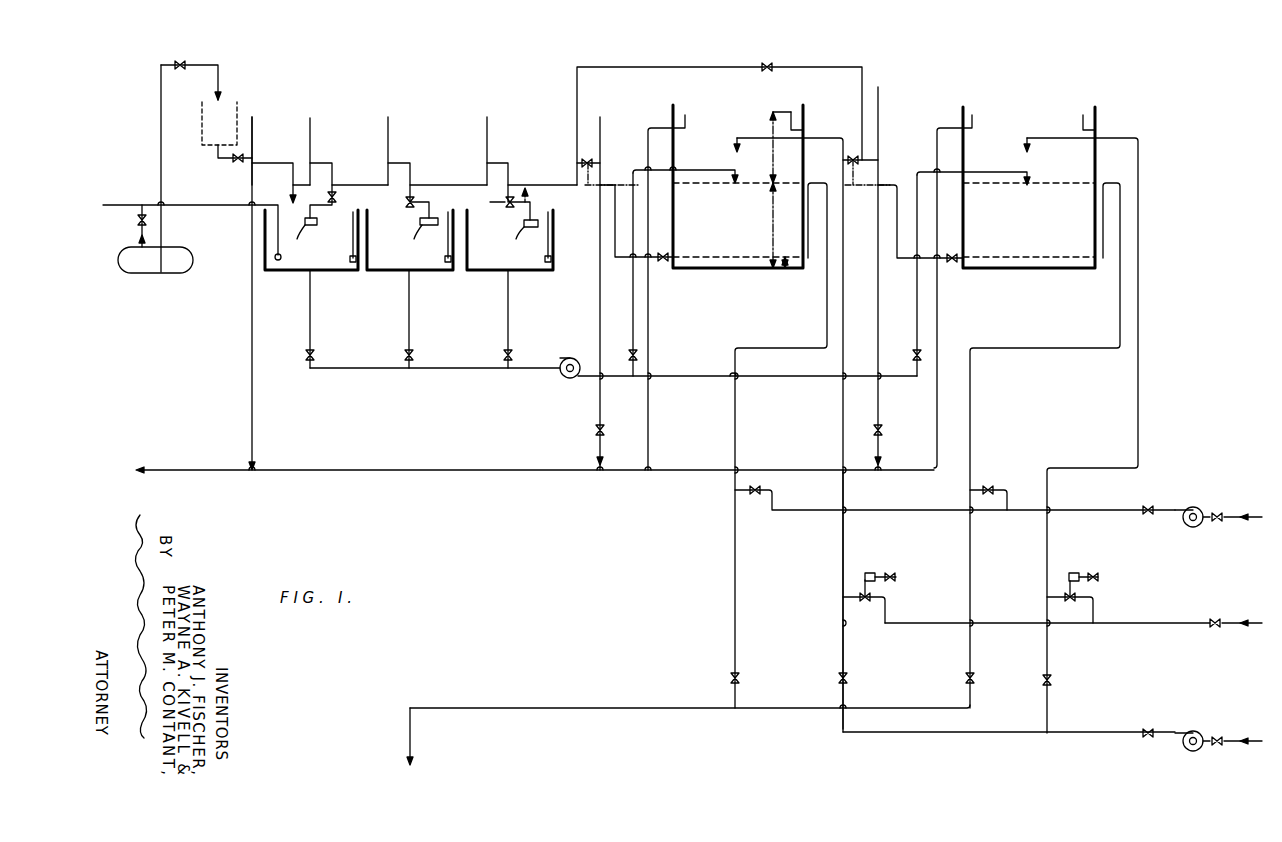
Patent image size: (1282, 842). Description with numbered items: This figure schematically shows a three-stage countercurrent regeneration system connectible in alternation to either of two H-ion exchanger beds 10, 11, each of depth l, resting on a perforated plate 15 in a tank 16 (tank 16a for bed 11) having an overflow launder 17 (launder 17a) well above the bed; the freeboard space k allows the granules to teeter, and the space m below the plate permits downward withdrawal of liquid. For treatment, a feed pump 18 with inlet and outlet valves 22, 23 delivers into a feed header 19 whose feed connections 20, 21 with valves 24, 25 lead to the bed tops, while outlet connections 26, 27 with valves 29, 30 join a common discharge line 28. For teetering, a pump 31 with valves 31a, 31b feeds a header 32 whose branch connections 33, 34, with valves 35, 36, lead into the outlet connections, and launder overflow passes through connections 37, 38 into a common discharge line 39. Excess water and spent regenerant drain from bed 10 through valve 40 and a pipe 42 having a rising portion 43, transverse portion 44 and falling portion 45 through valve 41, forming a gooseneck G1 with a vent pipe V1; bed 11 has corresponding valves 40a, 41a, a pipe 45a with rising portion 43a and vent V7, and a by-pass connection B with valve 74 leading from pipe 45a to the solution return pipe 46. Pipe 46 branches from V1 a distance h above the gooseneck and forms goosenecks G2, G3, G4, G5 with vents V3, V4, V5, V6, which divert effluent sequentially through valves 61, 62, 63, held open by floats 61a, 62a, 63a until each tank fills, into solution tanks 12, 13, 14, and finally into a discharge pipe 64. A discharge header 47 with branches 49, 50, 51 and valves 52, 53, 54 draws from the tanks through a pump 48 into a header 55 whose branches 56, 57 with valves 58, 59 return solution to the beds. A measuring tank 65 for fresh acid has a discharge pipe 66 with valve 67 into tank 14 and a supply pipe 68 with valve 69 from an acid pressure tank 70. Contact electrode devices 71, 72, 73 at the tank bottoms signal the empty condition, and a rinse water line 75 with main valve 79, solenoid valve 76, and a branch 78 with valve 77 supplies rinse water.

The exchanger bed 10 is at (738, 186).
The exchanger bed 11 is at (1029, 187).
The solution tank 12 is at (510, 240).
The solution tank 13 is at (410, 240).
The solution tank 14 is at (311, 240).
The perforated plate 15 is at (718, 270).
The tank 16 is at (656, 126).
The inlet pipe 16a is at (960, 126).
The overflow launder 17 is at (685, 115).
The overflow spout 17a is at (975, 116).
The feed pump 18 is at (1188, 749).
The feed header 19 is at (978, 732).
The feed connection 20 is at (843, 537).
The feed connection 21 is at (1138, 315).
The shut-off valve 22 is at (1217, 733).
The shut-off valve 23 is at (1145, 725).
The shut-off valve 24 is at (848, 679).
The shut-off valve 25 is at (1051, 679).
The outlet connection 26 is at (734, 558).
The outlet connection 27 is at (1118, 318).
The common discharge line 28 is at (535, 702).
The shut-off valve 29 is at (728, 679).
The shut-off valve 30 is at (974, 679).
The pump 31 is at (1203, 506).
The inlet valve 31a is at (1222, 512).
The outlet valve 31b is at (1145, 516).
The header 32 is at (1082, 509).
The branch connection 33 is at (1006, 498).
The branch connection 34 is at (775, 499).
The shut-off valve 35 is at (988, 487).
The shut-off valve 36 is at (755, 496).
The connection 37 is at (937, 330).
The connection 38 is at (648, 336).
The common discharge line 39 is at (458, 475).
The valve 40 is at (664, 264).
The valve 40a is at (951, 267).
The valve 41 is at (604, 432).
The valve 41a is at (880, 432).
The pipe 42 is at (624, 262).
The rising portion 43 is at (620, 194).
The pipe 43a is at (896, 184).
The transverse portion 44 is at (605, 188).
The falling portion 45 is at (600, 310).
The pipe 45a is at (878, 282).
The solution return pipe 46 is at (547, 185).
The discharge header 47 is at (480, 382).
The pump 48 is at (563, 382).
The branch connection 49 is at (508, 307).
The branch connection 50 is at (409, 307).
The branch connection 51 is at (308, 330).
The shut-off valve 52 is at (513, 357).
The shut-off valve 53 is at (414, 357).
The shut-off valve 54 is at (315, 357).
The header 55 is at (606, 385).
The branch connection 56 is at (633, 316).
The branch connection 57 is at (905, 300).
The shut-off valve 58 is at (630, 355).
The shut-off valve 59 is at (912, 357).
The valve 61 is at (500, 200).
The float 61a is at (529, 233).
The valve 62 is at (422, 201).
The float 62a is at (427, 236).
The valve 63 is at (323, 223).
The float 63a is at (298, 236).
The discharge pipe 64 is at (248, 324).
The measuring tank 65 is at (237, 103).
The discharge pipe 66 is at (285, 163).
The shut-off valve 67 is at (235, 162).
The supply pipe 68 is at (215, 64).
The shut-off valve 69 is at (183, 62).
The acid supply pressure tank 70 is at (173, 272).
The contact electrode device 71 is at (554, 259).
The contact electrode device 72 is at (451, 265).
The contact electrode device 73 is at (355, 265).
The valve 74 is at (769, 67).
The rinse water line 75 is at (982, 621).
The solenoid-actuated valve 76 is at (862, 572).
The valve 77 is at (1062, 572).
The branch 78 is at (1094, 604).
The main valve 79 is at (1216, 617).
The by-pass connection B is at (671, 67).
The vent pipe V1 is at (594, 120).
The vent V3 is at (488, 120).
The vent V4 is at (388, 120).
The vent V5 is at (312, 120).
The vent V6 is at (254, 122).
The vessel V7 is at (880, 122).
The gooseneck G1 is at (604, 178).
The gooseneck G2 is at (585, 163).
The gooseneck G3 is at (490, 164).
The gooseneck G4 is at (398, 164).
The gooseneck G5 is at (323, 164).
The distance h is at (612, 174).
The freeboard space k is at (779, 190).
The depth l is at (770, 217).
The space m is at (771, 273).